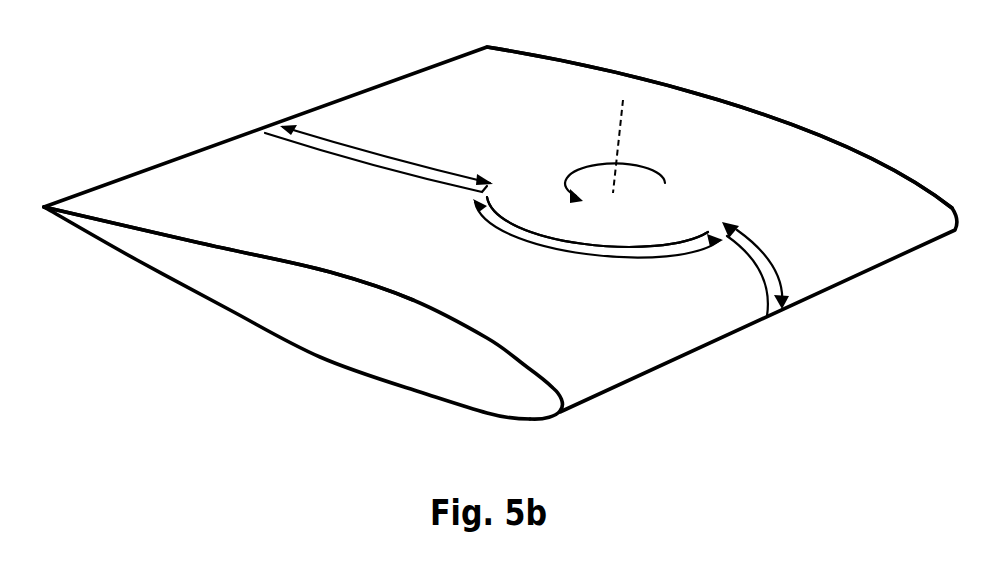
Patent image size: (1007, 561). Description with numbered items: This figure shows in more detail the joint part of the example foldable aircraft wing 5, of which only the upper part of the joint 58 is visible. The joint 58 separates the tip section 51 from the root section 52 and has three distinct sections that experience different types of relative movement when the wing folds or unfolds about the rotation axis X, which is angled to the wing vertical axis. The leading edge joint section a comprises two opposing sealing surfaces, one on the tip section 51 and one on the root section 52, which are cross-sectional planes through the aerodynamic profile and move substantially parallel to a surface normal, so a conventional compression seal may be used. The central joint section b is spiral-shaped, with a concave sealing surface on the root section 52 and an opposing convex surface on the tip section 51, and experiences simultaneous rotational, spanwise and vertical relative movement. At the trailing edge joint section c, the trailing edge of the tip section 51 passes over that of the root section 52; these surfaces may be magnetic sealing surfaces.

The foldable aircraft wing 5 is at (176, 389).
The tip section 51 is at (754, 179).
The root section 52 is at (377, 229).
The joint 58 is at (540, 232).
The leading edge joint section a is at (772, 253).
The central joint section b is at (595, 257).
The trailing edge joint section c is at (377, 153).
The rotation axis X is at (620, 137).